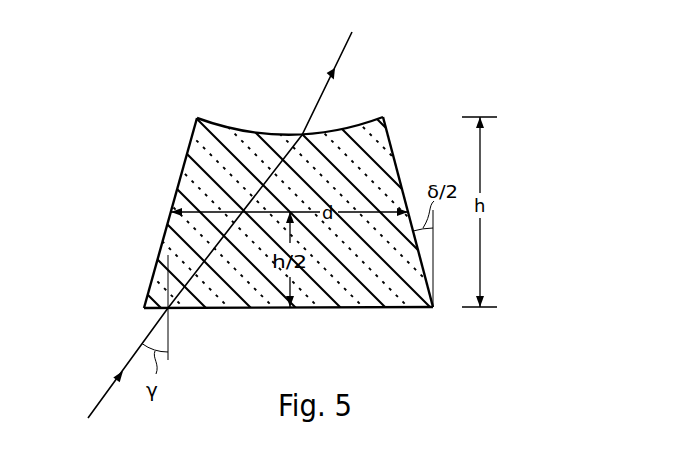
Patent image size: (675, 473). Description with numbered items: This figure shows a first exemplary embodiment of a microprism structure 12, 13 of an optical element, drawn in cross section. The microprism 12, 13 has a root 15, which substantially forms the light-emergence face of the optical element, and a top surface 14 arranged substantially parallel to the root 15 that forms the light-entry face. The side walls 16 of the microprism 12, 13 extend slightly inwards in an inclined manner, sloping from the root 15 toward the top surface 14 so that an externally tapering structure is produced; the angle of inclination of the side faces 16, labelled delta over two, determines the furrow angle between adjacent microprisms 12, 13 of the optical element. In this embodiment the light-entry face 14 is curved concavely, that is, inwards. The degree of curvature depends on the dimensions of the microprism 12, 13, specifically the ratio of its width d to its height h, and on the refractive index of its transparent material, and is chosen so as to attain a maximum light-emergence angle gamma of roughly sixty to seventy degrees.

The microprism structure 12 is at (289, 210).
The microprism structure 13 is at (158, 182).
The top surface 14 is at (247, 129).
The root 15 is at (240, 310).
The side walls 16 is at (395, 143).